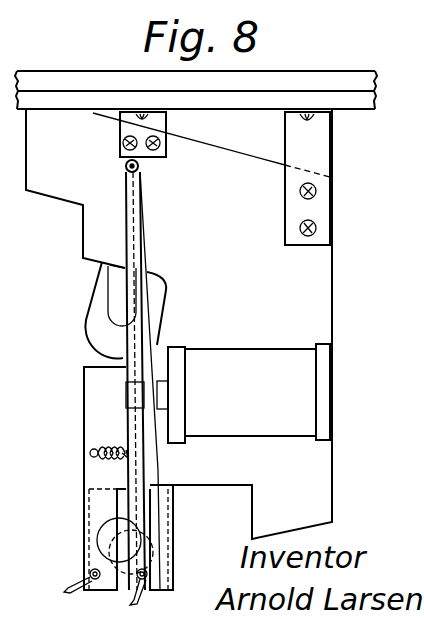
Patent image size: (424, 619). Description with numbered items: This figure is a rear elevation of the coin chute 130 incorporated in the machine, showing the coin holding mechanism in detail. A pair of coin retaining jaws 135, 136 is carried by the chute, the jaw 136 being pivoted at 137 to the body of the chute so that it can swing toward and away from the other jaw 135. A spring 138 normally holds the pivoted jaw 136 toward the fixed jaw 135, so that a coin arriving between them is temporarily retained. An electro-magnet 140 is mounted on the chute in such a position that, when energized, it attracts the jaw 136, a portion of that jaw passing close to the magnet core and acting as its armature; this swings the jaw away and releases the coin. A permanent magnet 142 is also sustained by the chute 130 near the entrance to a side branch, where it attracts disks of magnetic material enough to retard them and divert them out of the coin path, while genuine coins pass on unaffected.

The coin chute 130 is at (179, 357).
The pivot 137 is at (140, 166).
The permanent magnet 142 is at (98, 300).
The coin retaining jaw 136 is at (150, 510).
The electro-magnet 140 is at (243, 393).
The spring 138 is at (90, 453).
The coin retaining jaw 135 is at (92, 552).